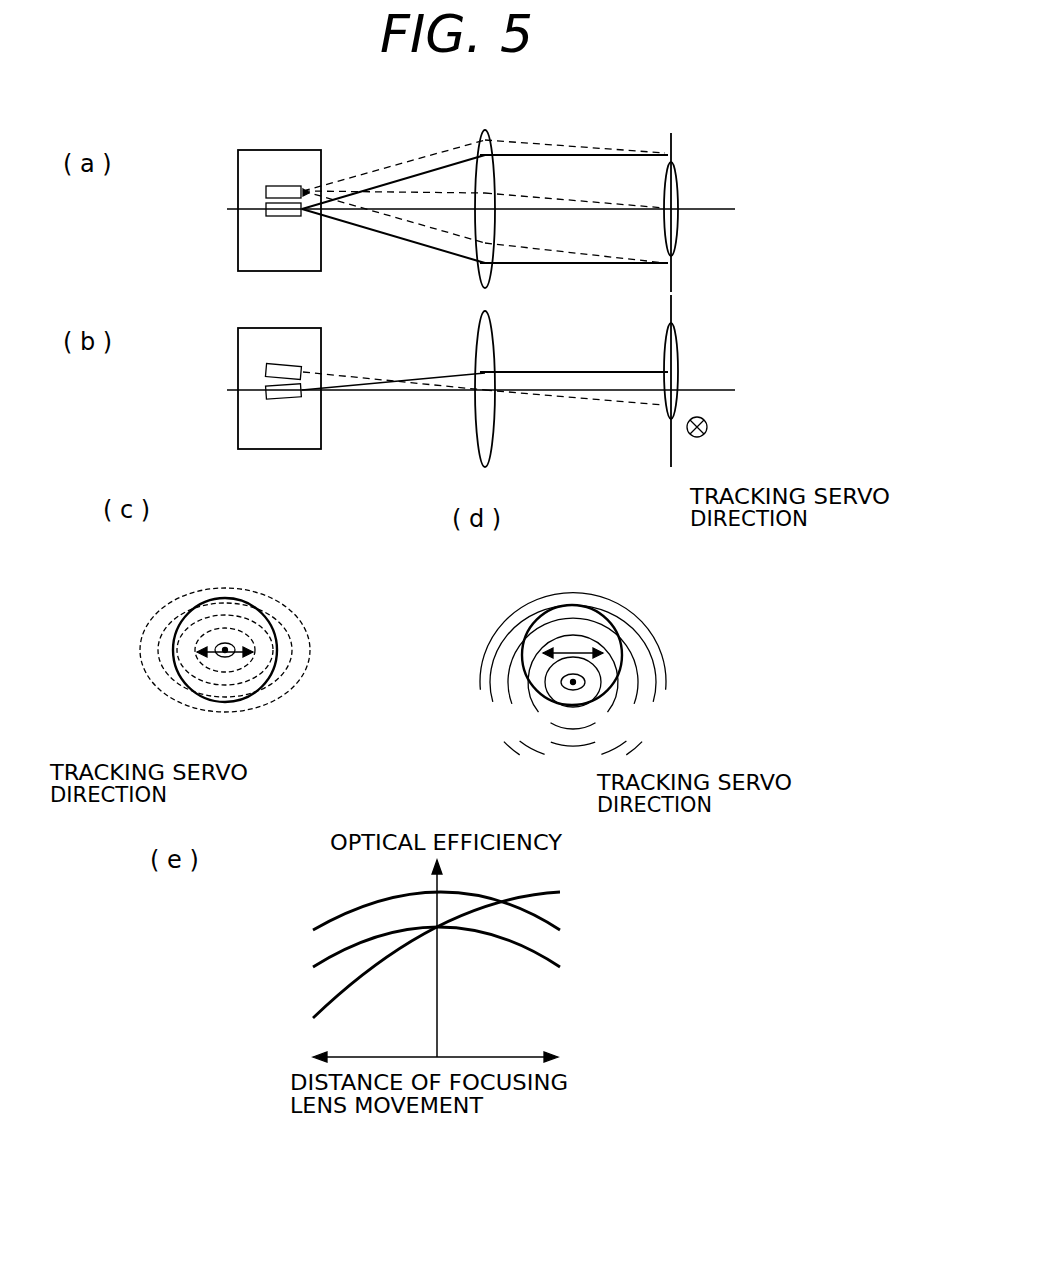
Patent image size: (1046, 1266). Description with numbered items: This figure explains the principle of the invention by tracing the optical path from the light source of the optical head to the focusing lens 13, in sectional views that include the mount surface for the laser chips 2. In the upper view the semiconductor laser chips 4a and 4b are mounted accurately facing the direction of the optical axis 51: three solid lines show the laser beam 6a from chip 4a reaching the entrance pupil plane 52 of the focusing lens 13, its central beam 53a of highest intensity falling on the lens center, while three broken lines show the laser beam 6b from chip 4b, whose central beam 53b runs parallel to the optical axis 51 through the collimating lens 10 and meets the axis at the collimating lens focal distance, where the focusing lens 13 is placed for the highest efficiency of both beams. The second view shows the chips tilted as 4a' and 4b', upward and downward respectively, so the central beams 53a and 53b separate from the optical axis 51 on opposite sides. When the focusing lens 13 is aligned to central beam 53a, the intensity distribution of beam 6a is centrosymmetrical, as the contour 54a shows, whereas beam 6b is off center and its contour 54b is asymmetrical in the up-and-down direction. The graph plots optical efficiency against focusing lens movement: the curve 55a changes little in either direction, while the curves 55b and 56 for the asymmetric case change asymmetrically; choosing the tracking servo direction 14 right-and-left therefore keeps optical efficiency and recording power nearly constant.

The mount surface for the laser chips 2 is at (238, 150).
The semiconductor laser chip 4a is at (219, 229).
The semiconductor laser chip 4b is at (223, 187).
The first light emitting point (shifted) 4a' is at (219, 415).
The second light emitting point (shifted) 4b' is at (311, 371).
The laser beam 6a is at (383, 236).
The laser beam 6b is at (380, 168).
The collimating lens 10 is at (485, 130).
The focusing lens 13 is at (677, 190).
The tracking servo direction 14 is at (702, 438).
The optical axis 51 is at (695, 212).
The entrance pupil plane 52 is at (671, 133).
The central beam 53a is at (527, 371).
The central beam 53b is at (525, 197).
The contour 54a is at (257, 608).
The contour 54b is at (645, 616).
The optical efficiency 55a is at (352, 910).
The optical efficiency 55b is at (328, 960).
The optical efficiency 56 is at (333, 1000).